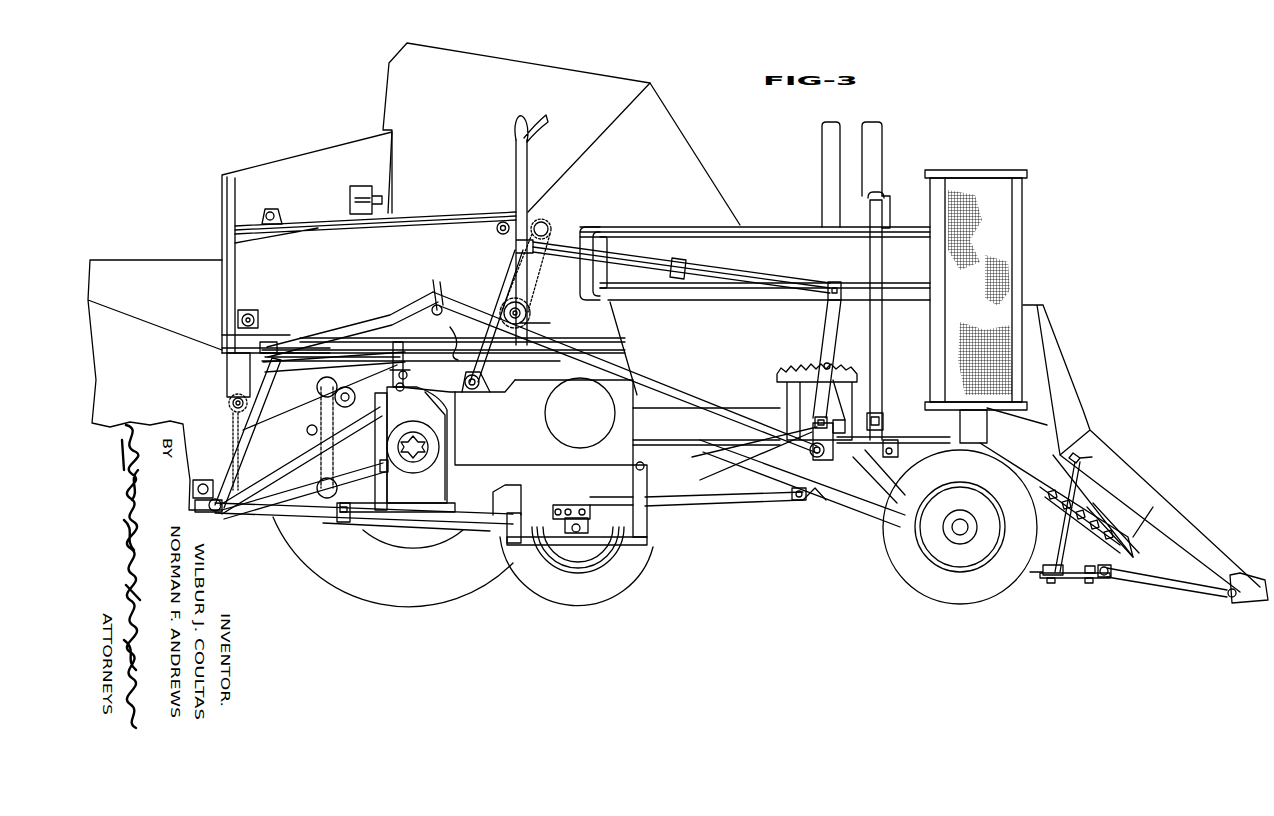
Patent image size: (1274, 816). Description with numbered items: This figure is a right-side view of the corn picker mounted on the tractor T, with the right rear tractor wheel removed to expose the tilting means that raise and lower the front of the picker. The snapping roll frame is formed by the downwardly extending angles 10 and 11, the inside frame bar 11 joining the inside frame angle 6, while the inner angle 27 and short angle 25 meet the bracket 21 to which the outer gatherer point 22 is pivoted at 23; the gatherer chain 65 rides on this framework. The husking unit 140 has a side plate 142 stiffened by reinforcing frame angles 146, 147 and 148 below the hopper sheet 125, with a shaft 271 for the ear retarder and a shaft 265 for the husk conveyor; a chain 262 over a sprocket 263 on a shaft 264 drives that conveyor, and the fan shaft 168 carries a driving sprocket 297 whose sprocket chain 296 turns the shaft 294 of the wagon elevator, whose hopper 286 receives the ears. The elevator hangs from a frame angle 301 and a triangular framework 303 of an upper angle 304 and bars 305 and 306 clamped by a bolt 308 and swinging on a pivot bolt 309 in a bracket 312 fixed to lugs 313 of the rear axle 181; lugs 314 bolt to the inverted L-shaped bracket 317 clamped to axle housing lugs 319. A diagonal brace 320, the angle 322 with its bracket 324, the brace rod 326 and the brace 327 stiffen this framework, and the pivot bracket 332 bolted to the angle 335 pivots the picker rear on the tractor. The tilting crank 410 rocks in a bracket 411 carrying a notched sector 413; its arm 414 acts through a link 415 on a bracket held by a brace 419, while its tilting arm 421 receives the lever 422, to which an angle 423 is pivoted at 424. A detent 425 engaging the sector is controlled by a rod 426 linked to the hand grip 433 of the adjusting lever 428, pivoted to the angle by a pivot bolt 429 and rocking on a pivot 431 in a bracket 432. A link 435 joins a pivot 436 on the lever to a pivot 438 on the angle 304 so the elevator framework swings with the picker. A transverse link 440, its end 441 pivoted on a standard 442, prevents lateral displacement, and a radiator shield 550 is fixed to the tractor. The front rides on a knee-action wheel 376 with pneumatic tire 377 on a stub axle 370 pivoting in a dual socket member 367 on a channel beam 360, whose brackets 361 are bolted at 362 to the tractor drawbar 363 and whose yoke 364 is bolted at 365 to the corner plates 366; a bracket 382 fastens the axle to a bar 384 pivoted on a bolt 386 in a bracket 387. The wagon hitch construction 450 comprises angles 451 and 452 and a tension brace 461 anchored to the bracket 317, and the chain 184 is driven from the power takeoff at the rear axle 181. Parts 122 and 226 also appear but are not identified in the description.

The hopper sheet 125 is at (487, 62).
The rafter 122 is at (680, 145).
The husking unit 140 is at (345, 140).
The reinforcing frame angle 147 is at (376, 226).
The shaft 271 is at (270, 208).
The hopper of the wagon elevator 286 is at (176, 260).
The reinforcing frame angle 148 is at (233, 300).
The shaft 265 is at (255, 318).
The bar 306 is at (400, 341).
The bar 305 is at (323, 349).
The frame angle 301 is at (268, 343).
The triangular framework 303 is at (404, 312).
The diagonal brace 320 is at (340, 328).
The upper angle 304 is at (378, 324).
The pivot 438 is at (436, 300).
The link 435 is at (692, 392).
The angle 335 is at (452, 352).
The adjusting lever 428 is at (530, 175).
The hand grip 433 is at (548, 135).
The pivot bolt 429 is at (498, 240).
The chain 262 is at (535, 288).
The sprocket 263 is at (532, 313).
The shaft 264 is at (540, 324).
The reinforcing frame angle 146 is at (505, 280).
The bracket 432 is at (483, 381).
The pivot 431 is at (474, 390).
The clamping bolt 308 is at (408, 387).
The pivot bracket 332 is at (425, 368).
The side plate 142 is at (450, 266).
The tractor T is at (786, 218).
The detent control rod 426 is at (722, 268).
The angle 423 is at (770, 278).
The pivot 424 is at (840, 282).
The standard 442 is at (881, 320).
The bent end of link 441 is at (876, 200).
The transversely disposed link 440 is at (888, 222).
The arm 414 is at (876, 418).
The link 415 is at (890, 442).
The detent 425 is at (828, 365).
The lever 422 is at (826, 325).
The tilting arm 421 is at (830, 420).
The notched sector 413 is at (794, 378).
The pivot 436 is at (800, 440).
The radiator shield 550 is at (1003, 216).
The inside frame angle 6 is at (606, 342).
The main frame corner plates 366 is at (676, 452).
The rear axle 181 is at (442, 455).
The bracket 312 is at (450, 438).
The lugs 313 is at (448, 428).
The laterally extending lugs 314 is at (400, 407).
The pivot bolt 309 is at (400, 418).
The rear axle housing lugs 319 is at (395, 472).
The inverted L-shaped angle bracket 317 is at (370, 451).
The driving sprocket 297 is at (232, 394).
The fan shaft 168 is at (229, 401).
The angle 322 is at (240, 450).
The bracket 324 is at (210, 478).
The brace rod 326 is at (318, 380).
The chain 184 is at (318, 418).
The brace 327 is at (308, 428).
The tension brace 461 is at (306, 442).
The sprocket chain 296 is at (275, 458).
The brace 226 is at (318, 474).
The shaft 294 is at (211, 514).
The angle 452 is at (266, 508).
The wagon hitch construction 450 is at (252, 522).
The inner angle 451 is at (302, 526).
The tractor drawbar 363 is at (404, 527).
The brackets 361 is at (507, 535).
The bolts 362 is at (520, 500).
The channel beam 360 is at (625, 542).
The yoke 364 is at (650, 515).
The bolts 365 is at (652, 468).
The bracket 382 is at (578, 508).
The stub axle 370 is at (576, 532).
The dual socket member 367 is at (552, 558).
The pneumatic tire 377 is at (620, 584).
The wheel 376 is at (661, 582).
The bar 384 is at (742, 502).
The pivot bolt 386 is at (792, 500).
The bracket 387 is at (812, 505).
The bracket 411 is at (768, 468).
The tilting crank 410 is at (790, 478).
The outer picker frame bar 10 is at (818, 498).
The inside frame bar 11 is at (862, 500).
The gatherer chain 65 is at (1042, 486).
The inner angle 27 is at (1080, 520).
The bracket 21 is at (1122, 562).
The short angle 25 is at (1072, 582).
The pivot 23 is at (1104, 578).
The outer gatherer point 22 is at (1172, 576).
The brace 419 is at (1032, 578).